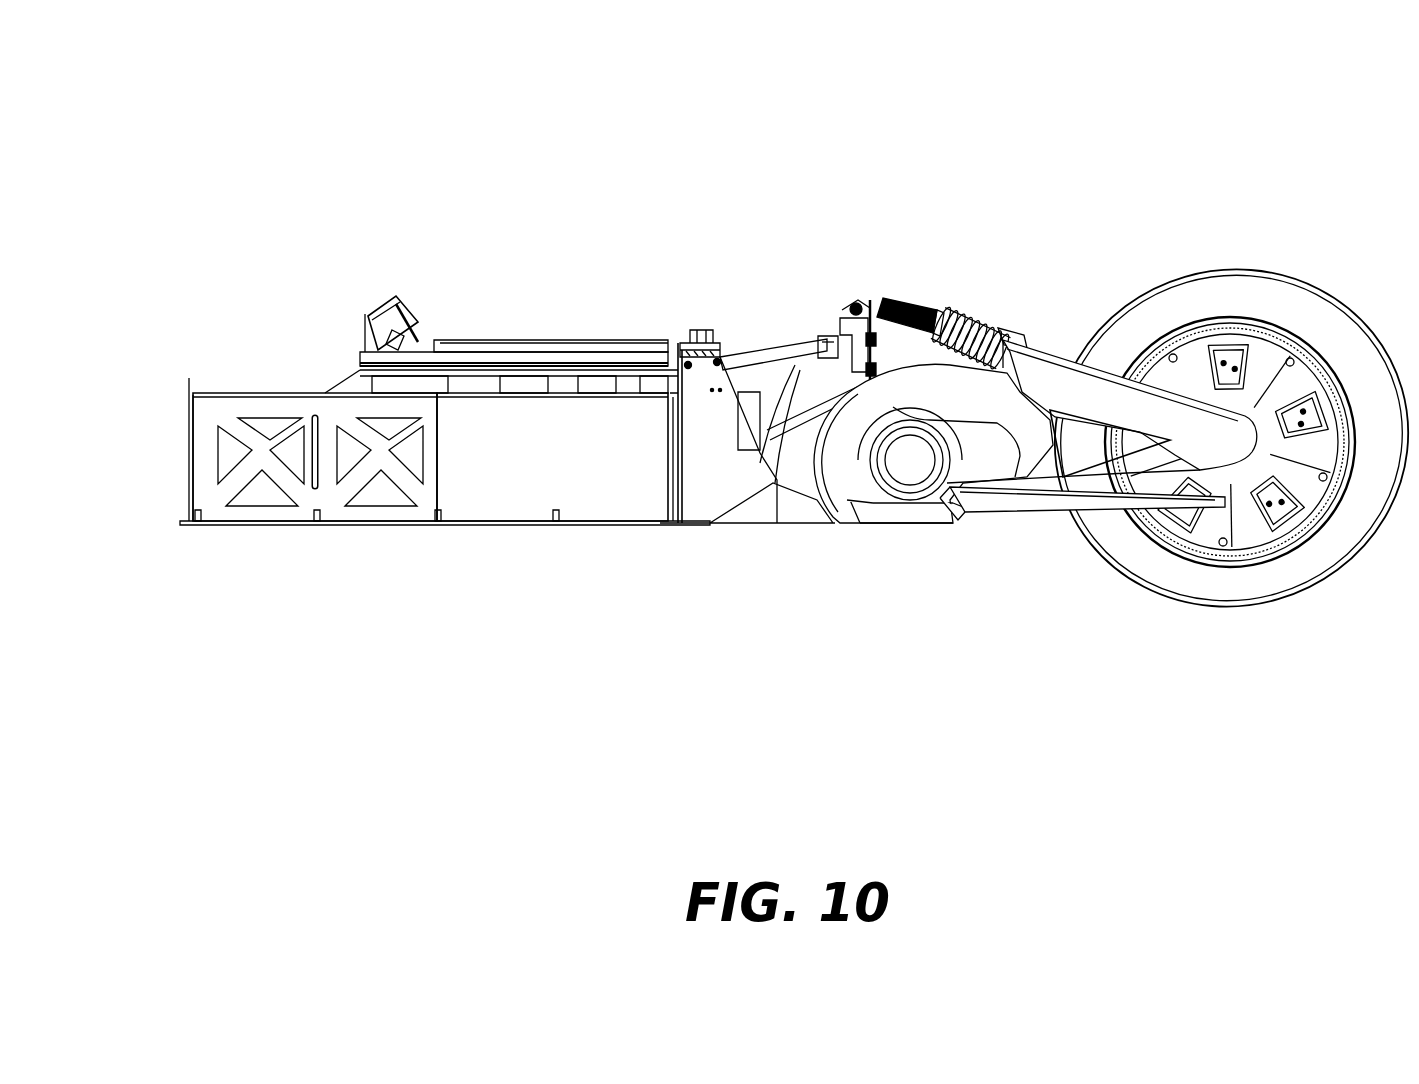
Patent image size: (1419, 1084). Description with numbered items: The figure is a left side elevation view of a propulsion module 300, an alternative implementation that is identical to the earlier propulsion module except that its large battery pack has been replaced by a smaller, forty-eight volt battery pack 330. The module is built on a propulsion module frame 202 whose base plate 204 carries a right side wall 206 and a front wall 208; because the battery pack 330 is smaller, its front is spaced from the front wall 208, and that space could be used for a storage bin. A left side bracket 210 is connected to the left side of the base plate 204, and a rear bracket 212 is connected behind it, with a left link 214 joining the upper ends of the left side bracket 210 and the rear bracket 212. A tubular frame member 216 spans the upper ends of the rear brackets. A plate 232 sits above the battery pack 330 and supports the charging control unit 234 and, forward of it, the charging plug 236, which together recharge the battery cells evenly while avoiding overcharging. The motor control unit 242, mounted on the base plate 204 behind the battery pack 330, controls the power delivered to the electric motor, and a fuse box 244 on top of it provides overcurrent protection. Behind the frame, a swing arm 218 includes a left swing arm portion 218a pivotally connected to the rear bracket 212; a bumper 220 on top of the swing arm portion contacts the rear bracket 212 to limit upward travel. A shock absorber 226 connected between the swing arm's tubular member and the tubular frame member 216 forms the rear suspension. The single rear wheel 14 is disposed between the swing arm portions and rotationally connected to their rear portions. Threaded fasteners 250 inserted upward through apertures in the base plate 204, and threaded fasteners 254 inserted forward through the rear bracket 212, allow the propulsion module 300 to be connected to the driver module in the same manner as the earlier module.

The propulsion module 300 is at (567, 190).
The propulsion module frame 202 is at (440, 562).
The base plate 204 is at (275, 527).
The right side wall 206 is at (315, 404).
The front wall 208 is at (189, 440).
The battery pack 330 is at (537, 468).
The plate 232 is at (422, 362).
The charging control unit 234 is at (578, 340).
The charging plug 236 is at (405, 300).
The fuse box 244 is at (690, 328).
The left side bracket 210 is at (727, 302).
The left link 214 is at (778, 390).
The rear bracket 212 is at (858, 300).
The tubular frame member 216 is at (860, 322).
The bumper 220 is at (957, 403).
The shock absorber 226 is at (998, 305).
The swing arm 218 is at (960, 566).
The left swing arm portion 218a is at (1048, 512).
The motor control unit 242 is at (753, 427).
The threaded fastener 254 is at (823, 360).
The threaded fastener 250 is at (197, 527).
The rear wheel 14 is at (1303, 572).